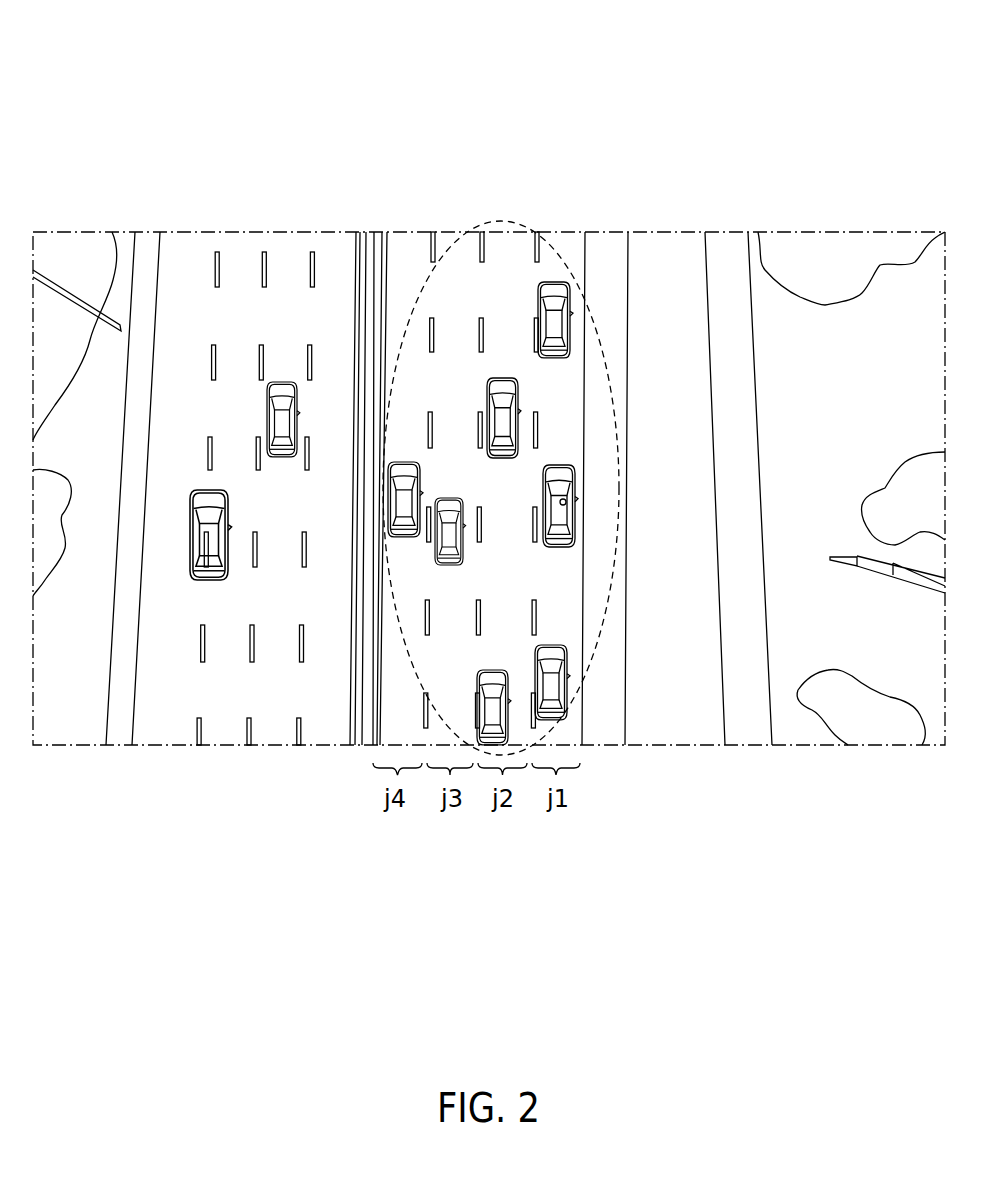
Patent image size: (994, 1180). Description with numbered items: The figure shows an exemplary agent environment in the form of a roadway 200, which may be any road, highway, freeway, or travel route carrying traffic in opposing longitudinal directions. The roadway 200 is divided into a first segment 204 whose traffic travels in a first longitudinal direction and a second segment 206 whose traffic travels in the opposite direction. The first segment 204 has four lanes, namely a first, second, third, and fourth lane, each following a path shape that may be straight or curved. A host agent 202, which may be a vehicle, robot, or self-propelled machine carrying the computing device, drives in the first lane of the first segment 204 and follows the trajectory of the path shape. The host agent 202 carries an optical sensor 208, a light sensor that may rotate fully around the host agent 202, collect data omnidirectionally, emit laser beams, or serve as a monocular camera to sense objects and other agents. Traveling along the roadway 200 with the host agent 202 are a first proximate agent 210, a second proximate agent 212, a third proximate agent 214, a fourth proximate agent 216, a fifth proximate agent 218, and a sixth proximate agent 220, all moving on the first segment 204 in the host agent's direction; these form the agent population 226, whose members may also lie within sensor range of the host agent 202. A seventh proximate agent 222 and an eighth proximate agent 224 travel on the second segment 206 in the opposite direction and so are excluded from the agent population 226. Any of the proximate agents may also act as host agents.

The roadway 200 is at (209, 78).
The host agent 202 is at (575, 505).
The first segment 204 is at (582, 212).
The second segment 206 is at (355, 212).
The optical sensor 208 is at (565, 477).
The first proximate agent 210 is at (567, 680).
The second proximate agent 212 is at (518, 425).
The third proximate agent 214 is at (570, 317).
The fourth proximate agent 216 is at (477, 703).
The fifth proximate agent 218 is at (445, 565).
The sixth proximate agent 220 is at (402, 462).
The seventh proximate agent 222 is at (266, 418).
The eighth proximate agent 224 is at (210, 580).
The agent population 226 is at (587, 268).